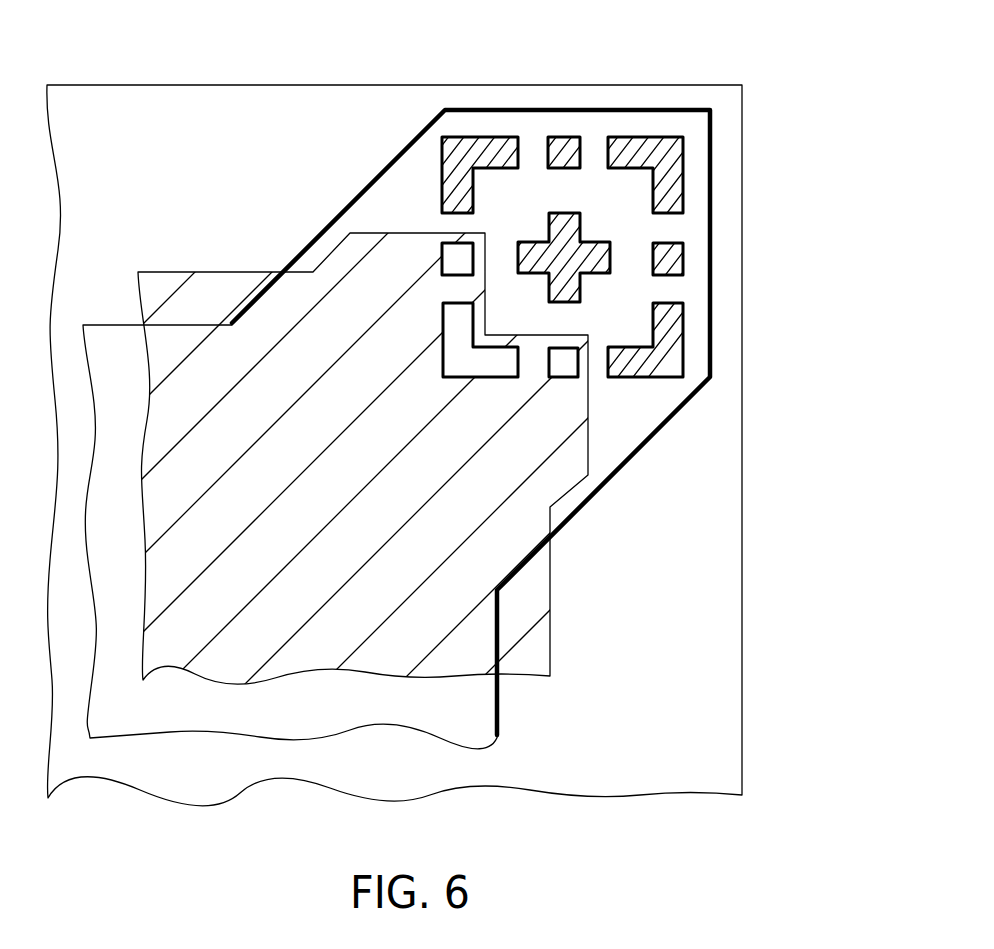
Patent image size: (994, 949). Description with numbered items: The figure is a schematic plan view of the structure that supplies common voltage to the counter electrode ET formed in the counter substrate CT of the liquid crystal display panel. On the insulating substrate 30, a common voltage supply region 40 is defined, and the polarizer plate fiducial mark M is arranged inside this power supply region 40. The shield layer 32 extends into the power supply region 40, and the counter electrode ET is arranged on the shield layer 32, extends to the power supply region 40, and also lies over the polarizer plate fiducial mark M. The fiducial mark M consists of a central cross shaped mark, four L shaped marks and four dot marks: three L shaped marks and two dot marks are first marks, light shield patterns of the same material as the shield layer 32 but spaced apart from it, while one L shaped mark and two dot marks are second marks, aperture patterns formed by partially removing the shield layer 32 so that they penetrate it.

The insulating substrate 30 is at (141, 96).
The counter substrate CT is at (272, 84).
The shield layer 32 is at (181, 282).
The counter electrode ET is at (113, 332).
The common voltage supply region 40 is at (421, 160).
The polarizer plate fiducial mark M is at (542, 350).